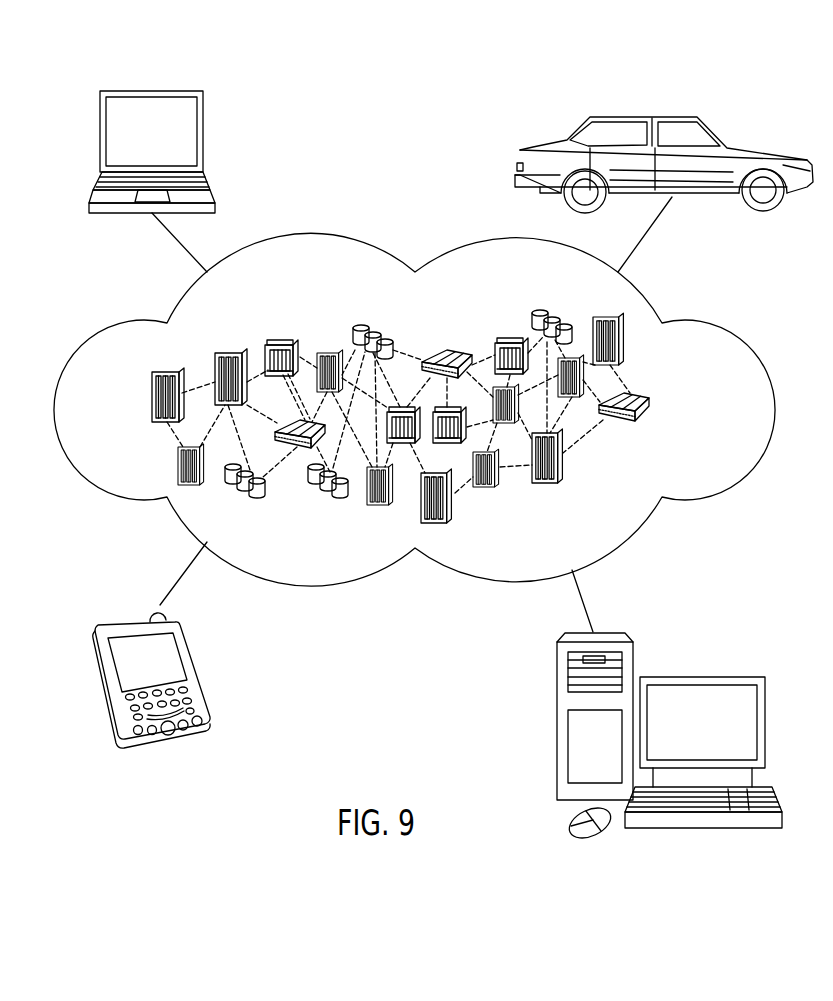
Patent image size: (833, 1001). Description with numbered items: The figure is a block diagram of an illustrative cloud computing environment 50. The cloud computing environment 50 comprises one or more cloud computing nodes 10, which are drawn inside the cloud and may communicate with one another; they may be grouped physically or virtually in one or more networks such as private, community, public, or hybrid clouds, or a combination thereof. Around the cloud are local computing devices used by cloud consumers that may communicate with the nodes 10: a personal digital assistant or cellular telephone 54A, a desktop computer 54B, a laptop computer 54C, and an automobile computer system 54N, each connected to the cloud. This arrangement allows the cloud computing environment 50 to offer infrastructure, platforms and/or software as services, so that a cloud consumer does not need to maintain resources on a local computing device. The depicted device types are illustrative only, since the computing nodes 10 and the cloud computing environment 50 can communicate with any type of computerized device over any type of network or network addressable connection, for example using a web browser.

The cloud computing node 10 is at (666, 410).
The cloud computing environment 50 is at (715, 325).
The personal digital assistant or cellular telephone 54A is at (135, 622).
The desktop computer 54B is at (703, 675).
The laptop computer 54C is at (152, 90).
The automobile computer system 54N is at (647, 118).